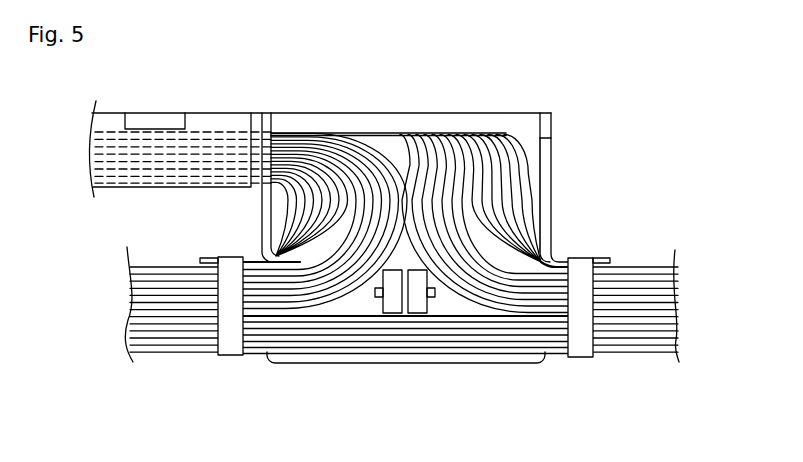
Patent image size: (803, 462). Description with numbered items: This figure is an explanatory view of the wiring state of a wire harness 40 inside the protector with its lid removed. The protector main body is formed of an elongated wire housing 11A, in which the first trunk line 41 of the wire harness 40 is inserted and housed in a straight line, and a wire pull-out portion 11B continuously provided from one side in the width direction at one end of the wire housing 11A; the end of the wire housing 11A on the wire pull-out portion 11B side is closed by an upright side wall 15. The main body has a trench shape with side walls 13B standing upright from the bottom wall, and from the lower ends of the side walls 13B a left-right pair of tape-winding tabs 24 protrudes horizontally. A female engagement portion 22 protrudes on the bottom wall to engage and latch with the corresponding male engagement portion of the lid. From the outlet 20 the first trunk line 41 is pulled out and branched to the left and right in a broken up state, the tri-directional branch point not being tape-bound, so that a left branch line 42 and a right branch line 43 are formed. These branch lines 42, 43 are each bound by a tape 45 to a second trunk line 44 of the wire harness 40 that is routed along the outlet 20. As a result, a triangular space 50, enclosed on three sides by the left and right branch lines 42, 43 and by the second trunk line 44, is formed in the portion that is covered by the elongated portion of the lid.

The wire housing 11A is at (210, 110).
The wire pull-out portion 11B is at (551, 209).
The side walls 13B is at (252, 197).
The side wall 15 is at (551, 128).
The outlet 20 is at (428, 266).
The female engagement portion 22 is at (383, 305).
The tape-winding tabs 24 is at (205, 258).
The wire harness 40 is at (637, 358).
The first trunk line 41 is at (375, 130).
The left branch line 42 is at (157, 265).
The right branch line 43 is at (648, 264).
The second trunk line 44 is at (481, 350).
The tape 45 is at (232, 348).
The triangular space 50 is at (358, 298).